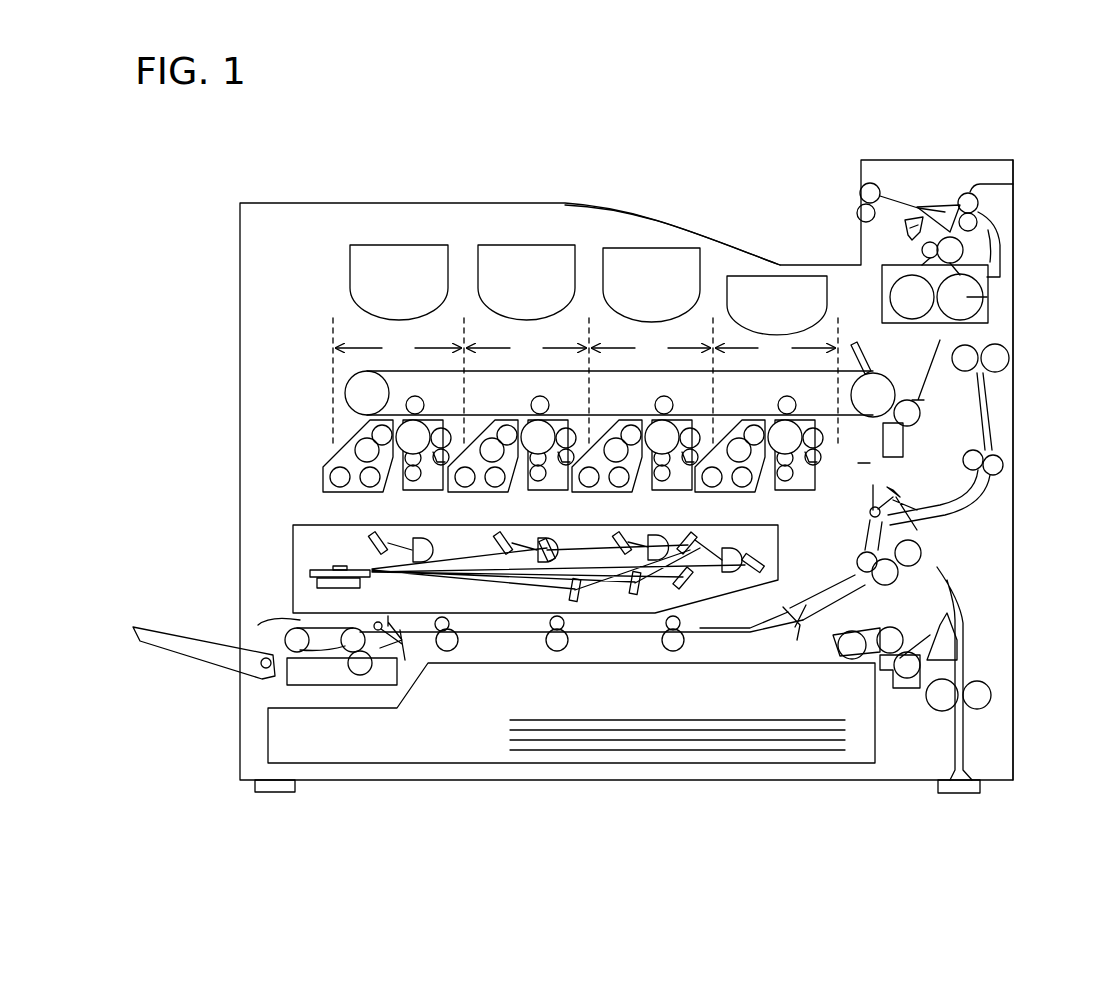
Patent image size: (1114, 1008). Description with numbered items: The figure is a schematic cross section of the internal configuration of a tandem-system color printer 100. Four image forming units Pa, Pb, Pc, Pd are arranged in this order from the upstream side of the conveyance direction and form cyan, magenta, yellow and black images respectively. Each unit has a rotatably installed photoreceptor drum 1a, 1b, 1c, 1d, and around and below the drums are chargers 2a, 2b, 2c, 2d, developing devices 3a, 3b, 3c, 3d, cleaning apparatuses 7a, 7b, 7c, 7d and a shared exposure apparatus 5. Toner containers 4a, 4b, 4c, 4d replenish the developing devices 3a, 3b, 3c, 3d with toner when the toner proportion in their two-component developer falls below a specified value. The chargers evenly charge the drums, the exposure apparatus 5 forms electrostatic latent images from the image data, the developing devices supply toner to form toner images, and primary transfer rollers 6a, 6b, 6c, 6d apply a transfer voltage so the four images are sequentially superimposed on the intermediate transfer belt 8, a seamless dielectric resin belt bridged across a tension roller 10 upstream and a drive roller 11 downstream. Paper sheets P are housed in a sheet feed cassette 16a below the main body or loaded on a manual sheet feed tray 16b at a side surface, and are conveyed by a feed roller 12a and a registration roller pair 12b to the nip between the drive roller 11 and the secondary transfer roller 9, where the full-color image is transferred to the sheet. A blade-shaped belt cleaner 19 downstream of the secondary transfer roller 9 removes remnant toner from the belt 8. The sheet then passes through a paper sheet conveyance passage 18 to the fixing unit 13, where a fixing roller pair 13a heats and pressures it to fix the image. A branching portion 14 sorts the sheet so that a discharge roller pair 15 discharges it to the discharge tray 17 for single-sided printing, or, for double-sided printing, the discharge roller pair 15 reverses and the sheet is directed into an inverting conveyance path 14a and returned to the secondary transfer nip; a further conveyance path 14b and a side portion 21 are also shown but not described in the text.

The color printer 100 is at (427, 184).
The photoreceptor drum 1a is at (413, 437).
The photoreceptor drum 1b is at (538, 437).
The photoreceptor drum 1c is at (662, 437).
The photoreceptor drum 1d is at (785, 437).
The charger 2a is at (418, 481).
The charger 2b is at (543, 481).
The charger 2c is at (667, 481).
The charger 2d is at (790, 481).
The developing device 3a is at (330, 470).
The developing device 3b is at (487, 423).
The developing device 3c is at (612, 423).
The developing device 3d is at (735, 423).
The toner container 4a is at (399, 282).
The toner container 4b is at (526, 282).
The toner container 4c is at (651, 285).
The toner container 4d is at (777, 305).
The exposure apparatus 5 is at (312, 522).
The primary transfer roller 6a is at (424, 402).
The primary transfer roller 6b is at (549, 402).
The primary transfer roller 6c is at (673, 402).
The primary transfer roller 6d is at (796, 402).
The cleaning apparatus 7a is at (446, 446).
The cleaning apparatus 7b is at (571, 446).
The cleaning apparatus 7c is at (695, 446).
The cleaning apparatus 7d is at (820, 446).
The intermediate transfer belt 8 is at (352, 372).
The secondary transfer roller 9 is at (912, 432).
The tension roller 10 is at (356, 393).
The drive roller 11 is at (877, 382).
The feed roller 12a is at (352, 640).
The registration roller pair 12b is at (872, 495).
The fixing unit 13 is at (990, 282).
The fixing roller pair 13a is at (987, 297).
The branching portion 14 is at (979, 202).
The inverting conveyance path 14a is at (985, 395).
The vertical conveyance path 14b is at (958, 673).
The discharge roller pair 15 is at (858, 192).
The sheet feed cassette 16a is at (268, 735).
The manual sheet feed tray 16b is at (198, 640).
The discharge tray 17 is at (678, 218).
The paper sheet conveyance passage 18 is at (920, 367).
The belt cleaner 19 is at (855, 343).
The side cover 21 is at (1013, 268).
The paper sheet P is at (598, 720).
The image forming unit Pa is at (398, 381).
The image forming unit Pb is at (528, 381).
The image forming unit Pc is at (652, 381).
The image forming unit Pd is at (777, 381).